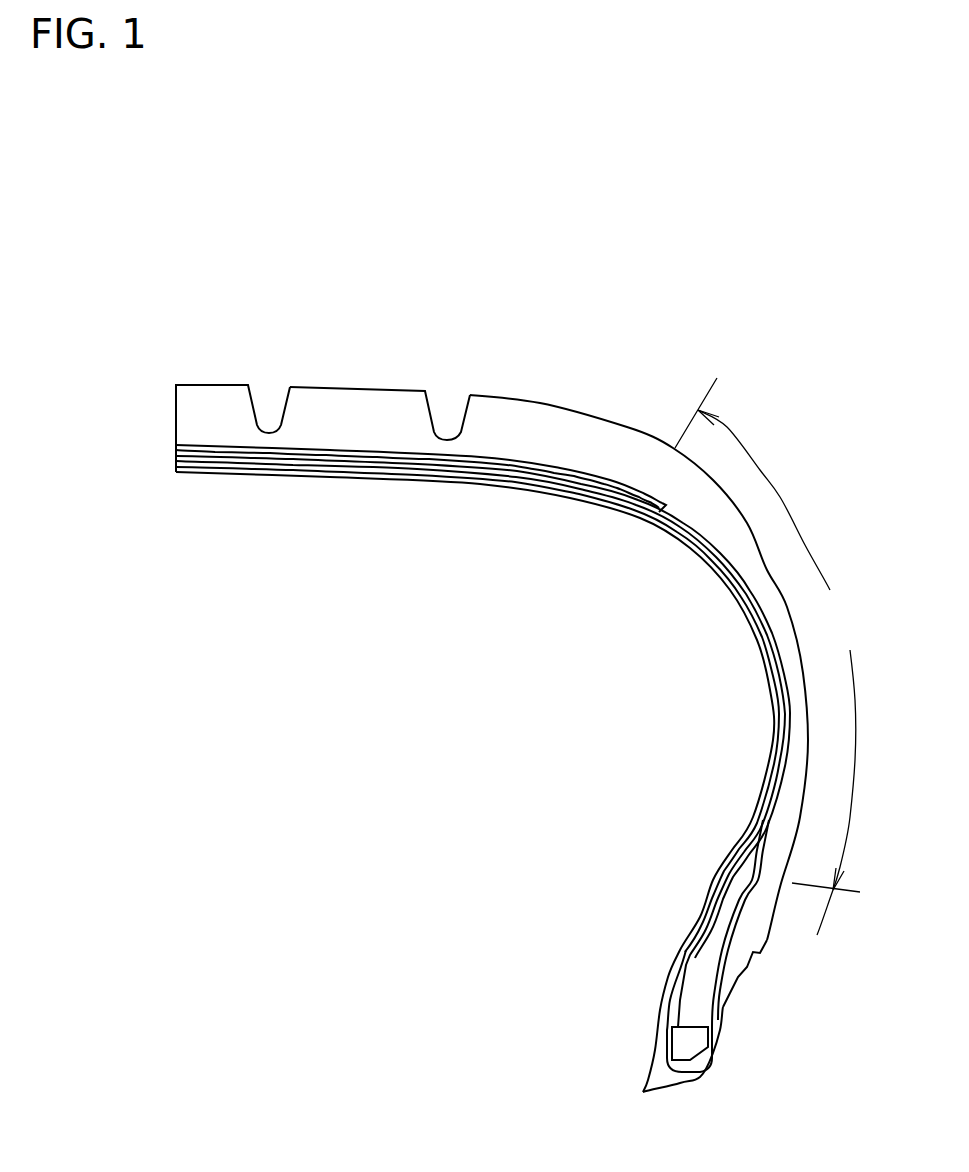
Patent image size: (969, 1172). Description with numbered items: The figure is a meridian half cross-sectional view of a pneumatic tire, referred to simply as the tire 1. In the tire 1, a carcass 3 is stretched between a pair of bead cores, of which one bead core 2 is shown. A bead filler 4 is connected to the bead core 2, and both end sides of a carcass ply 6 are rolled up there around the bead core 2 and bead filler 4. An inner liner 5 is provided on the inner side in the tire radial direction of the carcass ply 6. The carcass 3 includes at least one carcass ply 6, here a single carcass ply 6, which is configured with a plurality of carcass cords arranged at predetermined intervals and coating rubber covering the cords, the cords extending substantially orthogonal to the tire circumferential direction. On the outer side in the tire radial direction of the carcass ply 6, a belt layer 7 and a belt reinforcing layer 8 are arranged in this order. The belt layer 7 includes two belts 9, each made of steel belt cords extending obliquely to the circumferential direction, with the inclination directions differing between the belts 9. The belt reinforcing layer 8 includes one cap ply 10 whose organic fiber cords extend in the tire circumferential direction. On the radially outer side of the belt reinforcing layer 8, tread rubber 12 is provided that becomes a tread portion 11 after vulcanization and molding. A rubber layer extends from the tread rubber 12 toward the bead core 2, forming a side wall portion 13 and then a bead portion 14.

The tire 1 is at (175, 333).
The bead core 2 is at (685, 1043).
The carcass 3 is at (665, 946).
The bead filler 4 is at (693, 987).
The inner liner 5 is at (763, 788).
The carcass ply 6 is at (692, 950).
The belt layer 7 is at (483, 741).
The belt reinforcing layer 8 is at (421, 404).
The belt 9 is at (441, 471).
The cap ply 10 is at (298, 450).
The tread portion 11 is at (698, 410).
The tread rubber 12 is at (375, 400).
The side wall portion 13 is at (770, 656).
The bead portion 14 is at (826, 920).